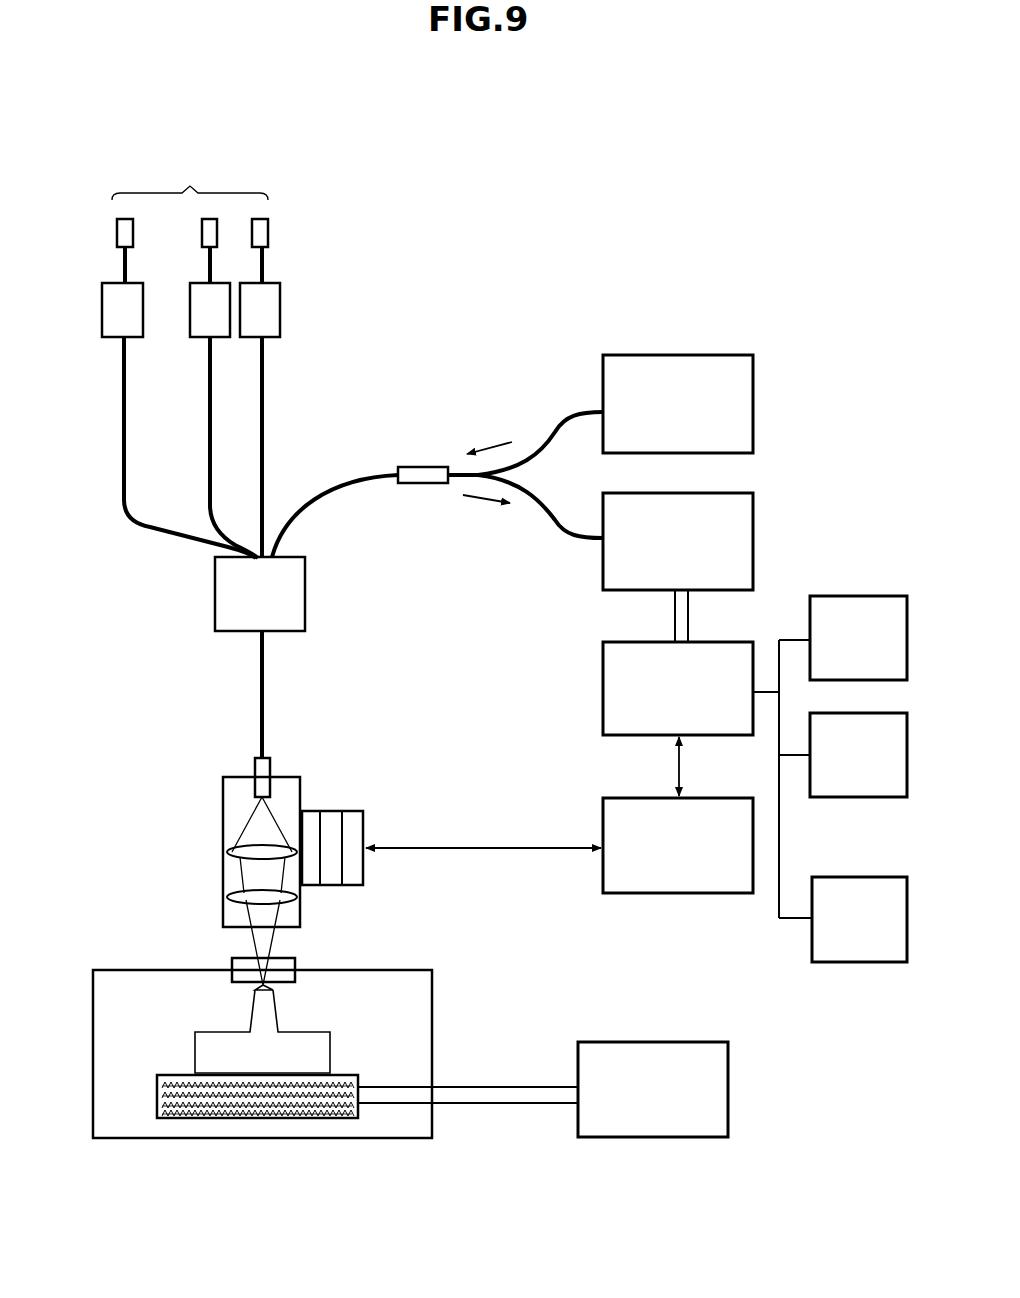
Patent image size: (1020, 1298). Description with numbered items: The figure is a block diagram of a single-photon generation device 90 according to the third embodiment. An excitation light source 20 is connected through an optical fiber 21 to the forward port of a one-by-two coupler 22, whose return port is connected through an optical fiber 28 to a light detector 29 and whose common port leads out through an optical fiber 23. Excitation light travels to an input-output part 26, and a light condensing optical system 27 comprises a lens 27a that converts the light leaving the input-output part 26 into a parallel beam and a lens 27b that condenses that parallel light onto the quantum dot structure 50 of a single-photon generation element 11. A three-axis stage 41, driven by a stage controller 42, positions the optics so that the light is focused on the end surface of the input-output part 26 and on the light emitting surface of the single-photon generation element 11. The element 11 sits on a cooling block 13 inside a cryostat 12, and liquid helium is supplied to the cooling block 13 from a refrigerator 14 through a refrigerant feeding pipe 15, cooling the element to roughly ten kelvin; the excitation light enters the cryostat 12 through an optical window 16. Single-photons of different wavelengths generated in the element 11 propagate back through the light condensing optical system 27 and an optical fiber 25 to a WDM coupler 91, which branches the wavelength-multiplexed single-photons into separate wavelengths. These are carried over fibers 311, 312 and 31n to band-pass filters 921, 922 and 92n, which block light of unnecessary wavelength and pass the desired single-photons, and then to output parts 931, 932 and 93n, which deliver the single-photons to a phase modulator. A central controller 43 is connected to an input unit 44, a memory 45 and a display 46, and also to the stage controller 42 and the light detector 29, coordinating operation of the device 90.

The single-photon generation device 90 is at (92, 123).
The output part 93n is at (117, 237).
The output part 932 is at (202, 243).
The output part 931 is at (268, 232).
The band-pass filter 92n is at (102, 310).
The band-pass filter 922 is at (192, 338).
The band-pass filter 921 is at (280, 308).
The optical fiber 31n is at (122, 395).
The optical fiber 312 is at (208, 440).
The optical fiber 311 is at (266, 386).
The WDM coupler 91 is at (305, 594).
The optical fiber 23 is at (346, 477).
The one-by-two coupler 22 is at (423, 485).
The optical fiber 21 is at (565, 425).
The optical fiber 28 is at (565, 542).
The excitation light source 20 is at (753, 402).
The light detector 29 is at (753, 528).
The central controller 43 is at (603, 690).
The input unit 44 is at (862, 596).
The memory 45 is at (859, 797).
The display 46 is at (860, 962).
The stage controller 42 is at (690, 893).
The optical fiber 25 is at (258, 714).
The input-output part 26 is at (270, 770).
The light condensing optical system 27 is at (202, 881).
The lens 27a is at (225, 850).
The lens 27b is at (225, 892).
The three-axis stage 41 is at (322, 887).
The optical window 16 is at (230, 957).
The quantum dot structure 50 is at (225, 1003).
The single-photon generation element 11 is at (185, 1045).
The cryostat 12 is at (433, 1013).
The cooling block 13 is at (268, 1118).
The refrigerator 14 is at (668, 1042).
The refrigerant feeding pipe 15 is at (497, 1105).